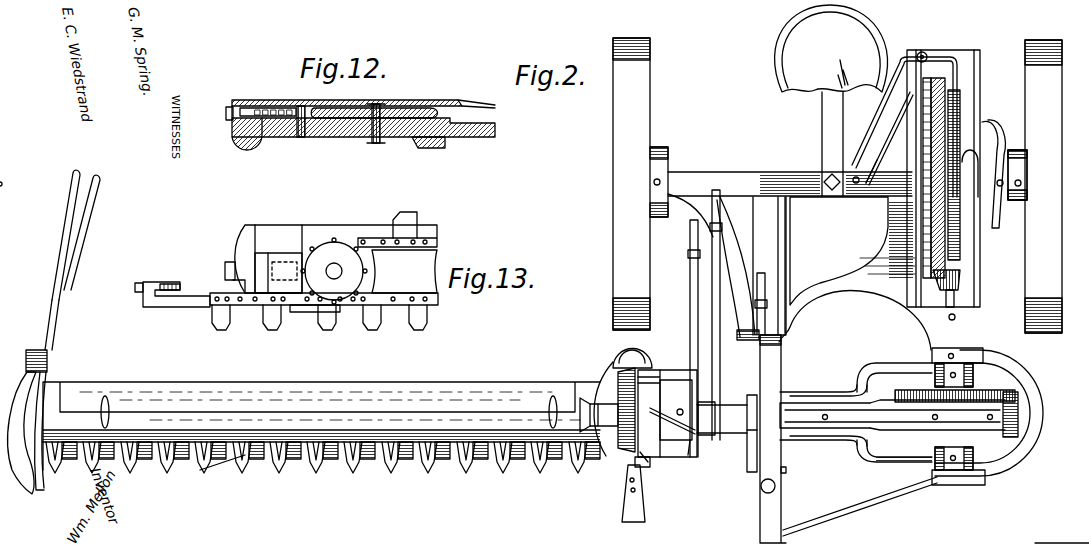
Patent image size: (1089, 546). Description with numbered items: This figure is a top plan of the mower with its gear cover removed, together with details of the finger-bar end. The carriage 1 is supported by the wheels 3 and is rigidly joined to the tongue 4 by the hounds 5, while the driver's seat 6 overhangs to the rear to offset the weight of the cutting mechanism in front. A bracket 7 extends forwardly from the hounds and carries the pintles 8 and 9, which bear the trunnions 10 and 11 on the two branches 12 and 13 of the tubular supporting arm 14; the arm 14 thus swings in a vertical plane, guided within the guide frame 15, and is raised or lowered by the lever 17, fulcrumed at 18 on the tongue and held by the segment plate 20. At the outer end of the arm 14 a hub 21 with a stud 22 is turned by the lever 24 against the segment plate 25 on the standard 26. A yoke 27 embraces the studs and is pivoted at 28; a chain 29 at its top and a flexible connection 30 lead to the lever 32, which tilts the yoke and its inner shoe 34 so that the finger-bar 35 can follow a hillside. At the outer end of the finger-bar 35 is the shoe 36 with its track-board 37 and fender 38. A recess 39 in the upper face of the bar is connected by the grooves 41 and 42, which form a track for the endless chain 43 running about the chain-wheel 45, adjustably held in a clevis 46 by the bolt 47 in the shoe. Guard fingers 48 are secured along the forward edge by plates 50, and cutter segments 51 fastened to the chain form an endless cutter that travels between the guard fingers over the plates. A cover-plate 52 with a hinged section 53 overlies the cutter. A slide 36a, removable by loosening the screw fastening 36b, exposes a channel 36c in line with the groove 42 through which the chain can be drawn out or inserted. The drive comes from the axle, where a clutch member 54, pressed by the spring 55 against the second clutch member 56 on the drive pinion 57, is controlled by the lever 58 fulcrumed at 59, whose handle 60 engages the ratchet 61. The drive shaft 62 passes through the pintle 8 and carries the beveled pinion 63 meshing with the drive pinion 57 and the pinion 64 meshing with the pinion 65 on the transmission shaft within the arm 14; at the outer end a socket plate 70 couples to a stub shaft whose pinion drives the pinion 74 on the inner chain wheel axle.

In FIG. 2, the carriage 1 is at (840, 212).
In FIG. 2, the wheels 3 is at (642, 118).
In FIG. 2, the tongue 4 is at (781, 470).
In FIG. 2, the hounds 5 is at (855, 320).
In FIG. 2, the driver's seat 6 is at (831, 100).
In FIG. 2, the bracket 7 is at (1018, 378).
In FIG. 2, the pintle 8 is at (930, 357).
In FIG. 2, the pintle 9 is at (930, 485).
In FIG. 2, the trunnion 10 is at (974, 380).
In FIG. 2, the trunnion 11 is at (975, 458).
In FIG. 2, the branch of supporting arm 12 is at (878, 372).
In FIG. 2, the branch of supporting arm 13 is at (882, 472).
In FIG. 2, the tubular supporting arm 14 is at (840, 430).
In FIG. 2, the guide frame 15 is at (748, 468).
In FIG. 2, the lever 17 is at (823, 372).
In FIG. 2, the fulcrum 18 is at (823, 407).
In FIG. 2, the segment plate 20 is at (868, 405).
In FIG. 2, the hub 21 is at (688, 440).
In FIG. 2, the stud 22 is at (688, 378).
In FIG. 2, the lever 24 is at (690, 290).
In FIG. 2, the segment plate 25 is at (690, 458).
In FIG. 2, the standard 26 is at (712, 445).
In FIG. 2, the yoke 27 is at (710, 345).
In FIG. 2, the pivot 28 is at (622, 452).
In FIG. 2, the chain 29 is at (650, 462).
In FIG. 2, the flexible connection 30 is at (672, 407).
In FIG. 2, the lever 32 is at (757, 268).
In FIG. 2, the inner shoe 34 is at (622, 490).
In FIG. 2, the finger-bar 35 is at (321, 402).
In FIG. 2, the outer shoe 36 is at (44, 465).
In FIG. 12, the outer shoe 36 is at (247, 150).
In FIG. 13, the outer shoe 36 is at (243, 237).
In FIG. 13, the slide 36a is at (172, 305).
In FIG. 13, the screw fastening 36b is at (168, 283).
In FIG. 13, the channel 36c is at (260, 310).
In FIG. 2, the track-board 37 is at (48, 338).
In FIG. 2, the fender 38 is at (75, 282).
In FIG. 13, the recess 39 is at (342, 243).
In FIG. 13, the groove 41 is at (370, 237).
In FIG. 13, the groove 42 is at (420, 235).
In FIG. 13, the endless chain 43 is at (224, 277).
In FIG. 12, the chain-wheel 45 is at (398, 110).
In FIG. 13, the chain-wheel 45 is at (330, 290).
In FIG. 12, the clevis 46 is at (325, 140).
In FIG. 13, the clevis 46 is at (297, 252).
In FIG. 12, the bolt 47 is at (226, 116).
In FIG. 2, the guard fingers 48 is at (235, 475).
In FIG. 12, the guard fingers 48 is at (437, 148).
In FIG. 2, the plates 50 is at (308, 455).
In FIG. 2, the cutter segments 51 is at (435, 452).
In FIG. 13, the cutter segments 51 is at (355, 318).
In FIG. 2, the cover-plate 52 is at (412, 414).
In FIG. 12, the cover-plate 52 is at (297, 108).
In FIG. 2, the hinged section 53 is at (174, 407).
In FIG. 2, the clutch member 54 is at (955, 175).
In FIG. 2, the spring 55 is at (995, 160).
In FIG. 2, the second clutch member 56 is at (925, 242).
In FIG. 2, the drive pinion 57 is at (944, 120).
In FIG. 2, the lever 58 is at (960, 92).
In FIG. 2, the fulcrum 59 is at (927, 54).
In FIG. 2, the handle 60 is at (864, 197).
In FIG. 2, the ratchet 61 is at (1015, 210).
In FIG. 2, the drive shaft 62 is at (956, 300).
In FIG. 2, the beveled pinion 63 is at (962, 283).
In FIG. 2, the pinion 64 is at (1005, 392).
In FIG. 2, the pinion 65 is at (1018, 417).
In FIG. 2, the socket plate 70 is at (620, 365).
In FIG. 2, the pinion 74 is at (597, 392).